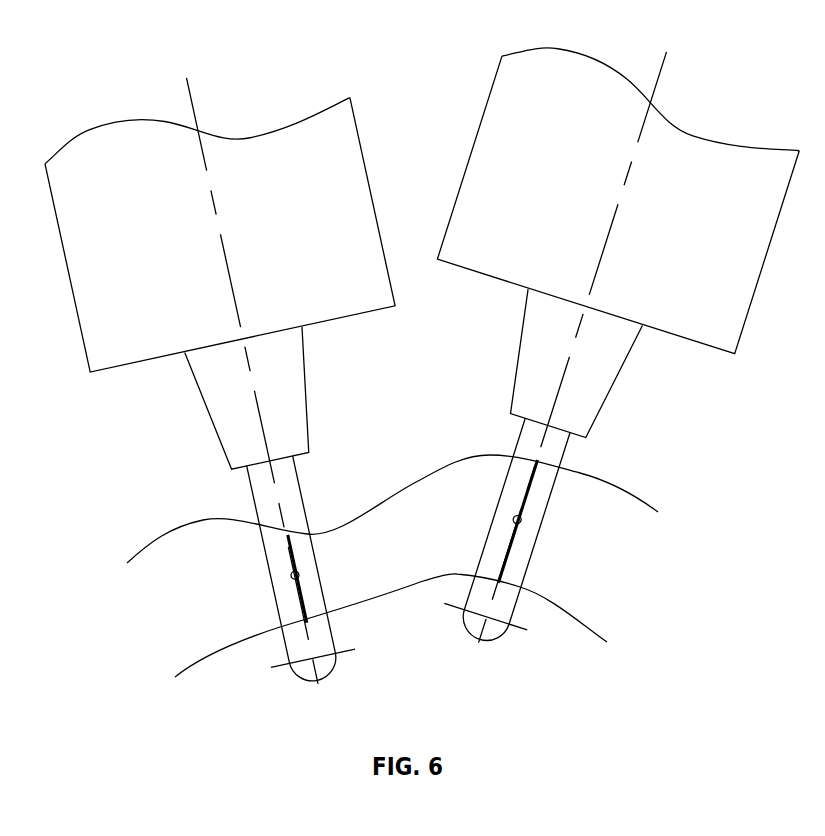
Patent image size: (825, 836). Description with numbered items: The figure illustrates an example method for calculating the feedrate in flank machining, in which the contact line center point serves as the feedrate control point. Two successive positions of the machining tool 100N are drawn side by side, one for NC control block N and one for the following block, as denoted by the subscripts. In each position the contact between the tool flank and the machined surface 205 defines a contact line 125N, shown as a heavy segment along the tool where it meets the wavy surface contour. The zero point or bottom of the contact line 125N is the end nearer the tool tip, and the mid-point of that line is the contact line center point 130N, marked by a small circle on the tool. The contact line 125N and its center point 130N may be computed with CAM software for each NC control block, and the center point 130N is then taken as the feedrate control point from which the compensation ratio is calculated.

The machining tool 100N is at (293, 515).
The contact line 125N is at (287, 547).
The contact line center point 130N is at (290, 577).
The machined surface 205 is at (424, 550).